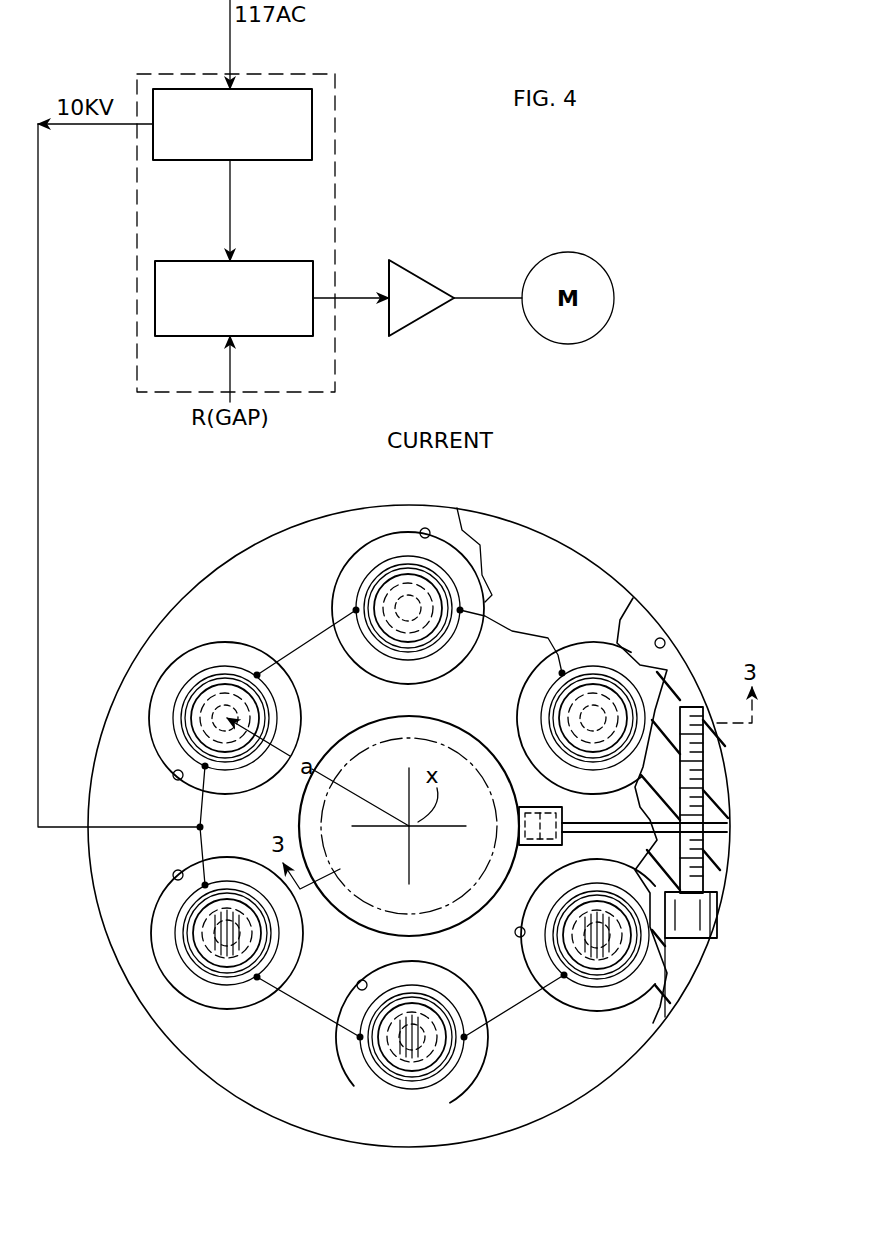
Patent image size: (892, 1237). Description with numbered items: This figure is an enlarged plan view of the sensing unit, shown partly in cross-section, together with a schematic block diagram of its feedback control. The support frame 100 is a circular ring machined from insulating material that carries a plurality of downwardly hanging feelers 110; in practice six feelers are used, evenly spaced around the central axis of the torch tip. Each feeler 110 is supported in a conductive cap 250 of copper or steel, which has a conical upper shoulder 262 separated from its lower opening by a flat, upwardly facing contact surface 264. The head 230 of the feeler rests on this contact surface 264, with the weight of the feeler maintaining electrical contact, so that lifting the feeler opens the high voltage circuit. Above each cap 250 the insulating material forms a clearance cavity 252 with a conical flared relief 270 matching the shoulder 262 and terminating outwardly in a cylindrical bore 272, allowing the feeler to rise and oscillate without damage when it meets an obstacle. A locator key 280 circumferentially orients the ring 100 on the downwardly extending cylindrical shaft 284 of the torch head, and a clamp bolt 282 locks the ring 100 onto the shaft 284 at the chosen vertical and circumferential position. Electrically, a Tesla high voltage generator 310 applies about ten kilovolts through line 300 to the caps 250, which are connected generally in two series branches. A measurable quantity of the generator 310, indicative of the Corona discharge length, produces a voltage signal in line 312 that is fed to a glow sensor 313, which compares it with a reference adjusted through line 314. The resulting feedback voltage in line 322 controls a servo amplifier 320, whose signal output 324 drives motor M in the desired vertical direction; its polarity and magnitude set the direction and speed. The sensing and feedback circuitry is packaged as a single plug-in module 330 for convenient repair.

The support frame 100 is at (284, 524).
The feeler 110 is at (428, 593).
The head 230 is at (402, 580).
The conductive cap 250 is at (366, 580).
The clearance cavity 252 is at (542, 712).
The conical upper shoulder 262 is at (370, 598).
The contact surface 264 is at (262, 710).
The conical flared relief 270 is at (445, 555).
The cylindrical bore 272 is at (422, 528).
The locator key 280 is at (562, 802).
The clamp bolt 282 is at (697, 768).
The cylindrical shaft 284 is at (344, 922).
The line 300 is at (38, 625).
The high voltage generator 310 is at (312, 118).
The line 312 is at (232, 210).
The glow sensor 313 is at (262, 261).
The line 314 is at (232, 372).
The servo amplifier 320 is at (418, 282).
The line 322 is at (347, 298).
The signal output 324 is at (495, 298).
The plug-in module 330 is at (307, 74).